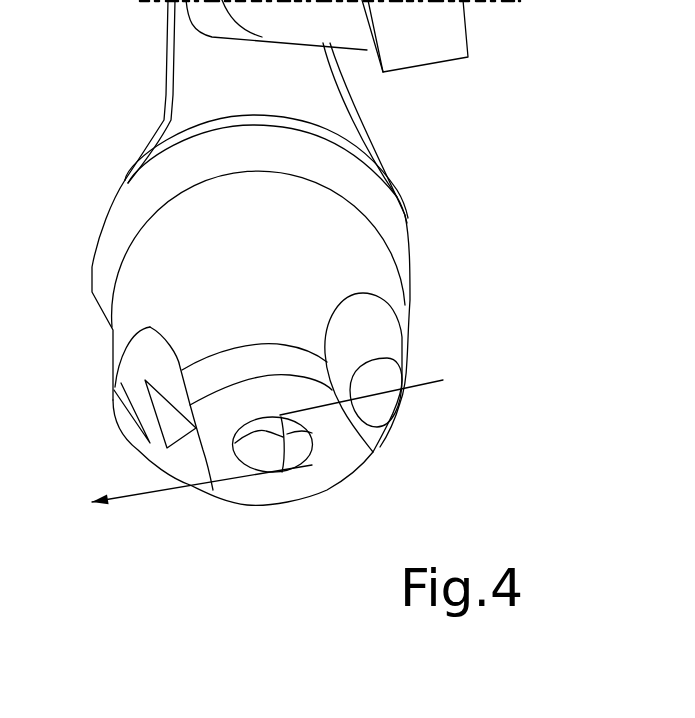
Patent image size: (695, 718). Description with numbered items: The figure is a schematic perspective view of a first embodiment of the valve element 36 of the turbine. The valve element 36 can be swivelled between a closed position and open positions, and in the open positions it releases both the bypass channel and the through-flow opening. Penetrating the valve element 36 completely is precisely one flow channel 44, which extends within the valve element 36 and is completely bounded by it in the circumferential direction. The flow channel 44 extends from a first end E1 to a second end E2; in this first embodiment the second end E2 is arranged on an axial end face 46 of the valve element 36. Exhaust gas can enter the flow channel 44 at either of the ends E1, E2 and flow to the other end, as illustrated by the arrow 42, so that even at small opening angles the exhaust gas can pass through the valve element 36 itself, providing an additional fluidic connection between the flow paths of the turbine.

The valve element 36 is at (320, 282).
The arrow 42 is at (443, 380).
The flow channel 44 is at (382, 385).
The axial end face 46 is at (247, 505).
The first end E1 is at (395, 417).
The second end E2 is at (300, 462).